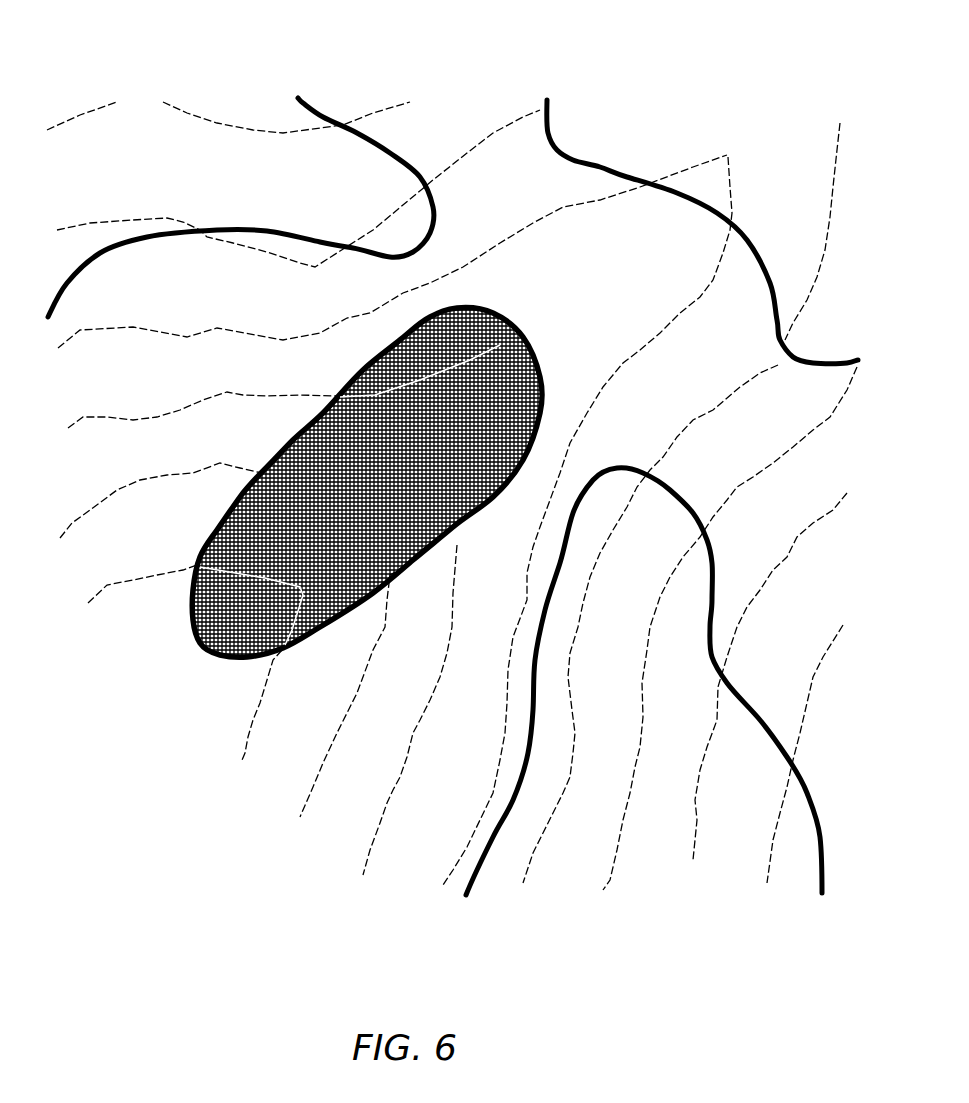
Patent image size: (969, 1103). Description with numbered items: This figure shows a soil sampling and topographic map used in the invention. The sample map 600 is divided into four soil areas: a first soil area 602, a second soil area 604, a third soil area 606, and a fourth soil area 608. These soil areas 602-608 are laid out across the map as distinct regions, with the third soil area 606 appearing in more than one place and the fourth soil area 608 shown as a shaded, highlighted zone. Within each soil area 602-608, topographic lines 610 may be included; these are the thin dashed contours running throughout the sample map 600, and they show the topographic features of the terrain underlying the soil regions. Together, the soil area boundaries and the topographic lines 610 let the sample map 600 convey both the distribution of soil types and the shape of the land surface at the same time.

The sample map 600 is at (325, 855).
The soil area S1 602 is at (717, 152).
The soil area S2 604 is at (637, 287).
The soil area S3 606 is at (205, 150).
The soil area S4 608 is at (377, 447).
The topographic lines 610 is at (547, 218).